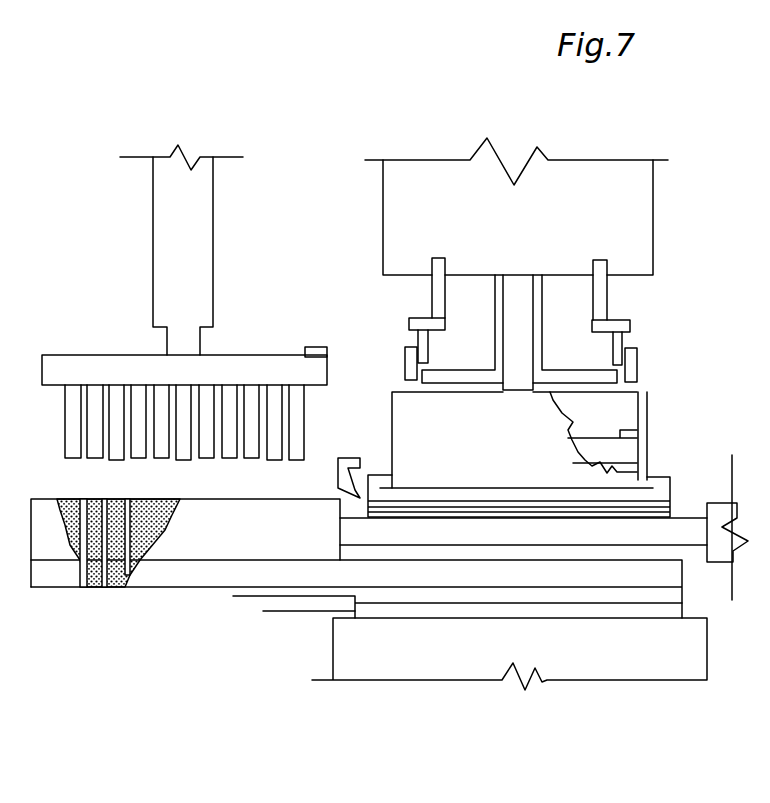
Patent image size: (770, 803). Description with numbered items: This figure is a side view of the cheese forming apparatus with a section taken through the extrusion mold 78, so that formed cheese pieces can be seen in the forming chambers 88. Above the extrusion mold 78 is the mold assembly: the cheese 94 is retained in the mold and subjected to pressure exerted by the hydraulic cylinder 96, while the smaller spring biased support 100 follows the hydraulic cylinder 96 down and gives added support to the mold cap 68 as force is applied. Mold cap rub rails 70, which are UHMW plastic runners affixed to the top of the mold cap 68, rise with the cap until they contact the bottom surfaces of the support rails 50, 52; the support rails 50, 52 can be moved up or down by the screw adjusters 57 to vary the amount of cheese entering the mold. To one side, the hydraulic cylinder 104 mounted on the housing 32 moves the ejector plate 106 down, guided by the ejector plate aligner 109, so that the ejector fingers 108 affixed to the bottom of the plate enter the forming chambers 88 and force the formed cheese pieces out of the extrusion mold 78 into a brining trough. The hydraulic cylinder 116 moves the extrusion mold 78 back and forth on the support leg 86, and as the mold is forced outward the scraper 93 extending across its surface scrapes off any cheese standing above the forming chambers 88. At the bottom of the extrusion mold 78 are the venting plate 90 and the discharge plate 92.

The housing 32 is at (414, 205).
The support rail 50 is at (405, 362).
The support rail 52 is at (637, 345).
The support rail height adjusting device 57 is at (613, 275).
The mold cap 68 is at (628, 457).
The mold cap rub rails 70 is at (647, 392).
The extrusion mold 78 is at (159, 545).
The support leg 86 is at (200, 570).
The forming chambers 88 is at (92, 587).
The venting plate 90 is at (233, 596).
The discharge plate 92 is at (263, 611).
The scraper 93 is at (344, 458).
The cheese 94 is at (115, 587).
The hydraulic cylinder 96 is at (498, 345).
The spring biased support 100 is at (520, 343).
The hydraulic cylinder 104 is at (153, 290).
The ejector plate 106 is at (47, 355).
The ejector fingers 108 is at (65, 422).
The ejector plate aligner 109 is at (312, 347).
The hydraulic cylinder 116 is at (717, 527).